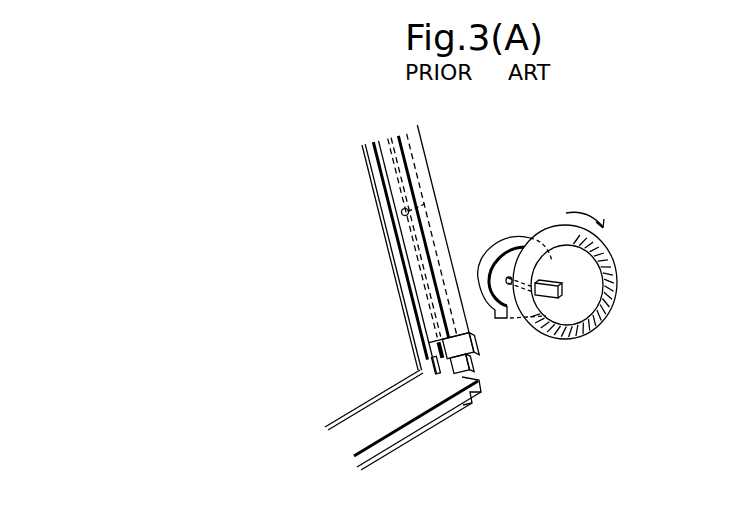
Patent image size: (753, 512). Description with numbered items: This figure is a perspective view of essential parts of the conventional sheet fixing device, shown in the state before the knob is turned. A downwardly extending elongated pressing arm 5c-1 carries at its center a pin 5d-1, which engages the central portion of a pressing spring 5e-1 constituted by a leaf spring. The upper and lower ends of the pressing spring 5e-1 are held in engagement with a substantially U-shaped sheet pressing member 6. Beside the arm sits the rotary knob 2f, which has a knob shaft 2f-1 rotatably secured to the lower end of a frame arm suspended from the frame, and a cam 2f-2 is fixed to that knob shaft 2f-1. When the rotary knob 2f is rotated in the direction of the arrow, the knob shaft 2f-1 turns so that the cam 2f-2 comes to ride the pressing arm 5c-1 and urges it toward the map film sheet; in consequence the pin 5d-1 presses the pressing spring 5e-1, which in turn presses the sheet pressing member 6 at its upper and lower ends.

The pressing arm 5c-1 is at (428, 162).
The pin 5d-1 is at (427, 203).
The pressing spring 5e-1 is at (437, 250).
The sheet pressing member 6 is at (437, 412).
The rotary knob 2f is at (577, 337).
The knob shaft 2f-1 is at (545, 312).
The cam 2f-2 is at (507, 247).